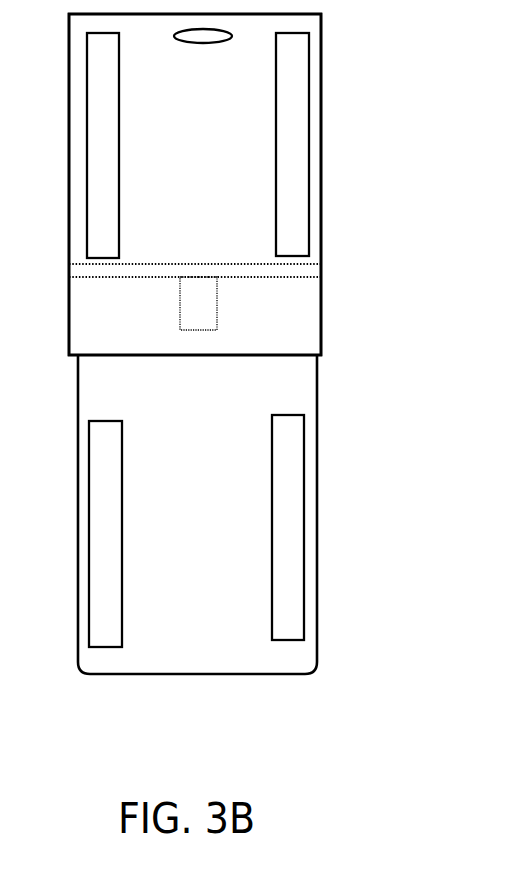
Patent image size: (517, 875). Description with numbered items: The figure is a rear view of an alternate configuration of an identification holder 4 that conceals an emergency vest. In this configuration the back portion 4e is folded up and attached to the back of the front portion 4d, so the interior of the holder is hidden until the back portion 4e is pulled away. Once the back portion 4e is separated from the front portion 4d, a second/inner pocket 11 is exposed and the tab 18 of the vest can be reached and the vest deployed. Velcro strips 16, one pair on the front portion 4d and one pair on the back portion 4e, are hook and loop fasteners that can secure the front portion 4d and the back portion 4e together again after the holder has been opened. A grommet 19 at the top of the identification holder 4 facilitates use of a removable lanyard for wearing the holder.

The identification holder 4 is at (69, 219).
The front portion 4d is at (69, 55).
The back portion 4e is at (170, 578).
The Velcro strips 16 is at (108, 172).
The grommet 19 is at (233, 32).
The second/inner pocket 11 is at (120, 277).
The tab 18 is at (195, 310).